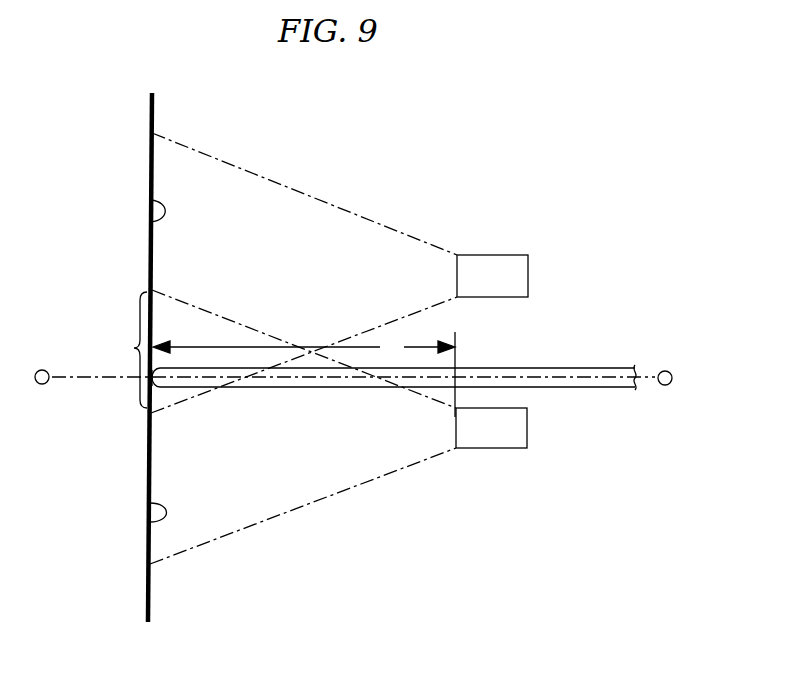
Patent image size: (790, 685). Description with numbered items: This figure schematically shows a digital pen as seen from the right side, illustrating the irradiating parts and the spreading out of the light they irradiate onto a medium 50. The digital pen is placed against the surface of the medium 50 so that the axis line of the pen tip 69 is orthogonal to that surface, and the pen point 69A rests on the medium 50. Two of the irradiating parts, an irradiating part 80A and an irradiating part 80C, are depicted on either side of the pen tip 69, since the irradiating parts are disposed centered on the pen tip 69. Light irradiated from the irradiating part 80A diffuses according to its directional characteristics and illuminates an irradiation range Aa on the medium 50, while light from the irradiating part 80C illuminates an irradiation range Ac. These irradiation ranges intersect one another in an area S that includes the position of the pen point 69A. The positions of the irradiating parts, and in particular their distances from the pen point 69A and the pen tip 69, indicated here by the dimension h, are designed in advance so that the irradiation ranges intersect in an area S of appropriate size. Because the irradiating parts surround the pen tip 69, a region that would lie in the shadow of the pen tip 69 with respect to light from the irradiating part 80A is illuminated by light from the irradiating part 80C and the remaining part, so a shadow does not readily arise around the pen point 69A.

The medium 50 is at (153, 108).
The irradiating part 80A is at (499, 263).
The irradiating part 80C is at (491, 440).
The pen tip 69 is at (597, 368).
The pen point 69A is at (147, 388).
The irradiation range Aa is at (151, 204).
The irradiation range Ac is at (150, 522).
The area S is at (130, 350).
The distance h is at (304, 374).